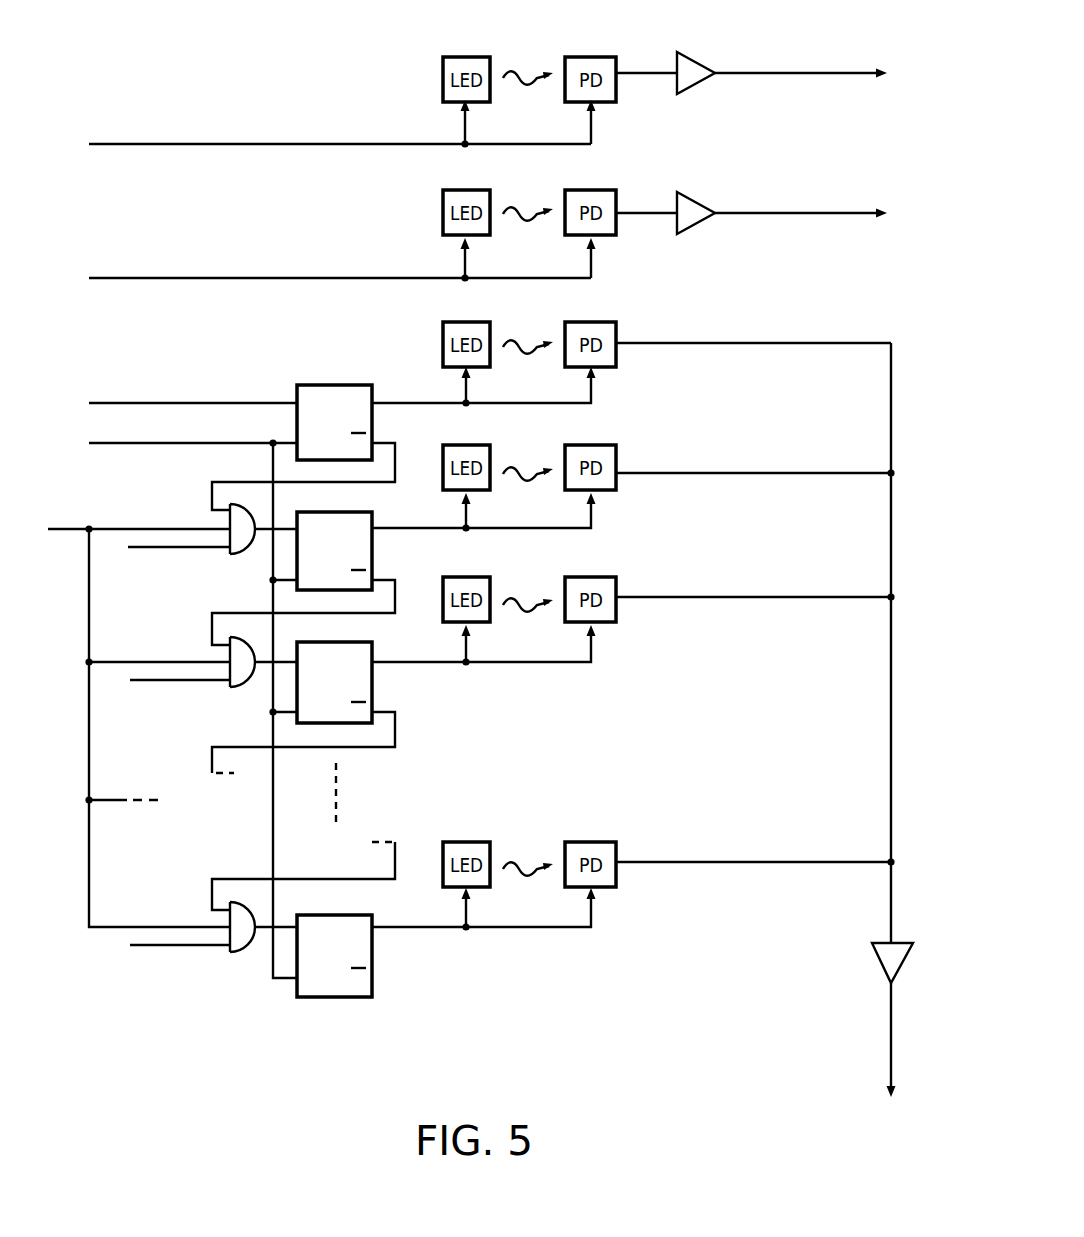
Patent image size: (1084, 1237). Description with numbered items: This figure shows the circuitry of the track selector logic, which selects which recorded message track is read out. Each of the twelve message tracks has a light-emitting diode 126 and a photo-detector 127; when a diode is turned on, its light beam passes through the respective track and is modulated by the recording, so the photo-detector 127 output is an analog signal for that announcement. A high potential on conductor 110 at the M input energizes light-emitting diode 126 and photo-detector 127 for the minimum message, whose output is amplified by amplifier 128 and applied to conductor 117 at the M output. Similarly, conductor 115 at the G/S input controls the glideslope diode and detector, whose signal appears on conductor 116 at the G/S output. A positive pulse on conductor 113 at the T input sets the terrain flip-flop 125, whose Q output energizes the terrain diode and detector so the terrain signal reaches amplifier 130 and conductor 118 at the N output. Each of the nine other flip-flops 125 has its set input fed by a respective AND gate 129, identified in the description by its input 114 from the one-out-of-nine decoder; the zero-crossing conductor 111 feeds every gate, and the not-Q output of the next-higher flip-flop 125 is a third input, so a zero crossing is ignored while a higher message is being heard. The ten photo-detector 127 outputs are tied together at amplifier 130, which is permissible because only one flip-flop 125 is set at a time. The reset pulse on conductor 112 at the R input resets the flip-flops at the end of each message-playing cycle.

The conductor 110 is at (195, 144).
The zero-crossing conductor 111 is at (118, 529).
The conductor 112 is at (203, 427).
The conductor 113 is at (208, 403).
The AND gate 114 is at (205, 547).
The conductor 115 is at (224, 276).
The conductor 116 is at (855, 193).
The conductor 117 is at (822, 52).
The conductor 118 is at (783, 325).
The flip-flop 125 is at (354, 385).
The light-emitting diode 126 is at (481, 47).
The photo-detector 127 is at (605, 47).
The amplifier 128 is at (701, 63).
The AND gate 129 is at (250, 548).
The amplifier 130 is at (872, 957).